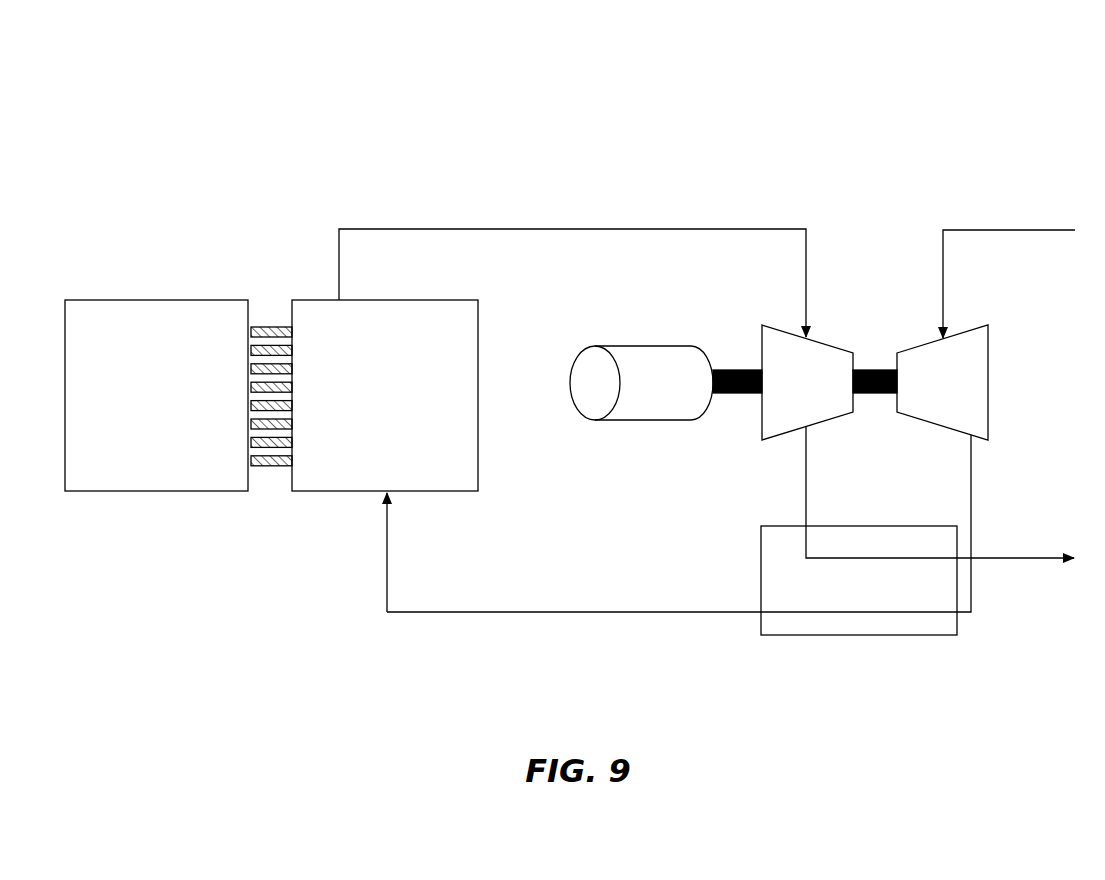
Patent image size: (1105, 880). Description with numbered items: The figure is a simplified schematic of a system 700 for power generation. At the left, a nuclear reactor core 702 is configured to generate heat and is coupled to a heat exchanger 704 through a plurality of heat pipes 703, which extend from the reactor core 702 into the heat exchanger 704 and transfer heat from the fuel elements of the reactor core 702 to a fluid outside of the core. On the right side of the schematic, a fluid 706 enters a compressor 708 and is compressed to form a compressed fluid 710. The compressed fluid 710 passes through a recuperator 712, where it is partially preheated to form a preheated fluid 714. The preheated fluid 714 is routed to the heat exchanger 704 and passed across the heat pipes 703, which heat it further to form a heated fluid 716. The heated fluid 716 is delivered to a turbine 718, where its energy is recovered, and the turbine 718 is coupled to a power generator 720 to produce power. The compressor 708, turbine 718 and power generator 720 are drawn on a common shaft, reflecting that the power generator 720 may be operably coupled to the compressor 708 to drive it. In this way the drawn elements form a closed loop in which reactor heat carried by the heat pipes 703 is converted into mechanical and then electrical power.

The system for power generation 700 is at (290, 136).
The nuclear reactor core 702 is at (128, 409).
The heat pipes 703 is at (278, 467).
The heat exchanger 704 is at (365, 409).
The fluid 706 is at (1002, 230).
The compressor 708 is at (923, 395).
The compressed fluid 710 is at (973, 512).
The recuperator 712 is at (842, 594).
The preheated fluid 714 is at (442, 613).
The heated fluid 716 is at (481, 229).
The turbine 718 is at (786, 395).
The power generator 720 is at (635, 395).